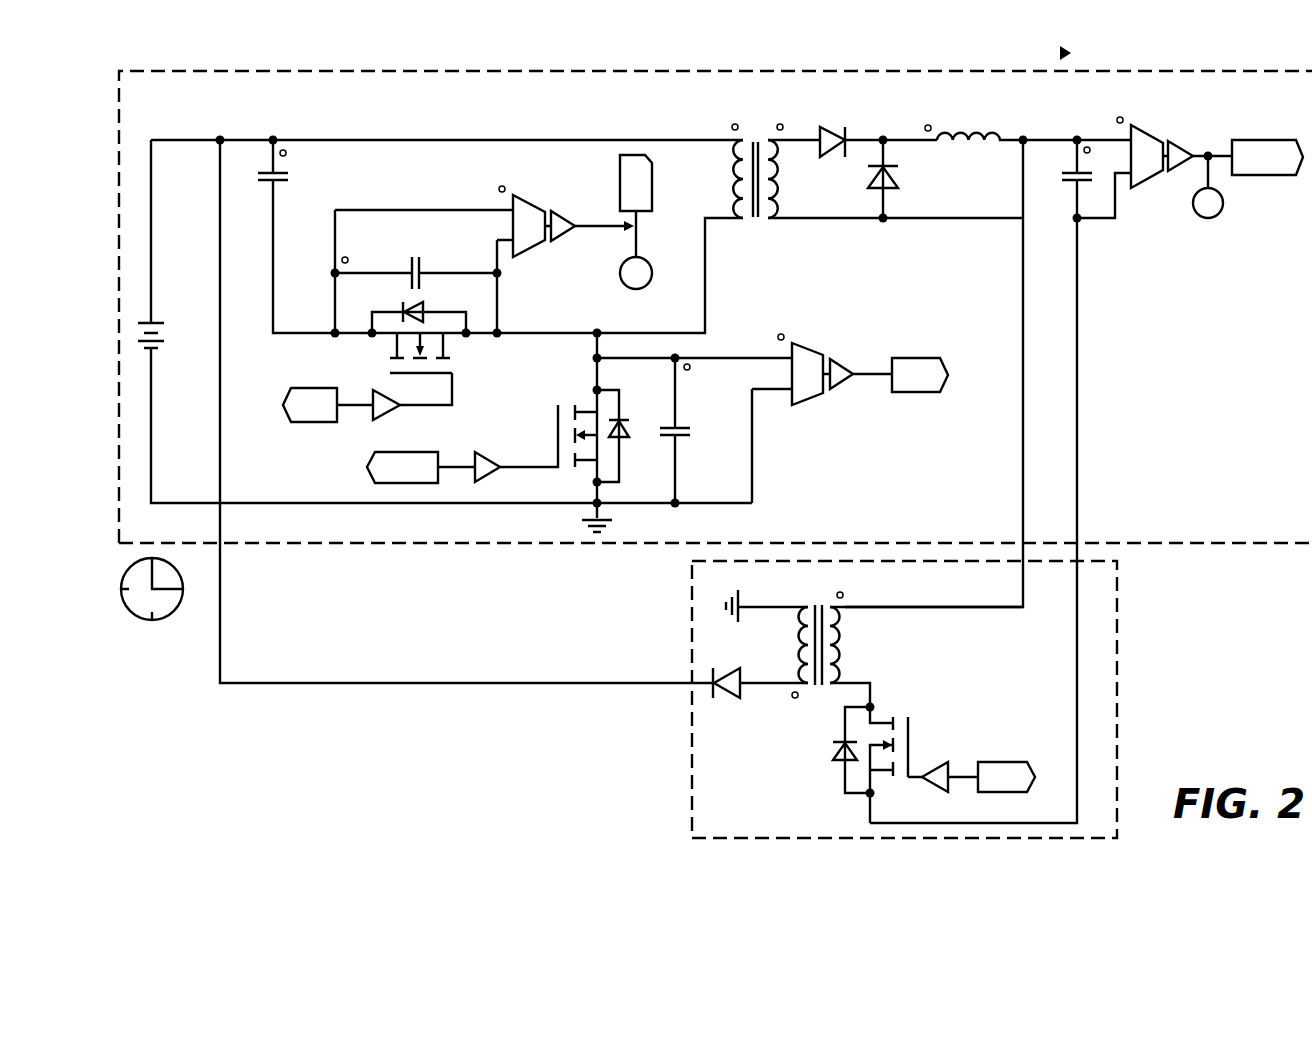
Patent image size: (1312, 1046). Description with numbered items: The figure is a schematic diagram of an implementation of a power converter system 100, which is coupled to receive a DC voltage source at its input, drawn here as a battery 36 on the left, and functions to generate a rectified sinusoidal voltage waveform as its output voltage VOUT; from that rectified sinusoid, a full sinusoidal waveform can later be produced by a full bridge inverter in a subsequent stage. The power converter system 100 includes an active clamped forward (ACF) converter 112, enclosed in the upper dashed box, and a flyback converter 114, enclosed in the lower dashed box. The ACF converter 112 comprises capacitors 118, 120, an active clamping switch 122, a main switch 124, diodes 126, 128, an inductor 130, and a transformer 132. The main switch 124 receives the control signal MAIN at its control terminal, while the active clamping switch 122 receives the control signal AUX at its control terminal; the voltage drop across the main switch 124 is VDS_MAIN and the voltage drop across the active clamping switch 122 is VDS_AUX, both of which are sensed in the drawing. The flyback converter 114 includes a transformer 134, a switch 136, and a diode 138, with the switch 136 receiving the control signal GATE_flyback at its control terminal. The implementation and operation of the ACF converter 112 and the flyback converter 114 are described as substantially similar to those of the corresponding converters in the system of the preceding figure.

The battery 36 is at (167, 335).
The power converter system 100 is at (230, 780).
The active clamped forward (ACF) converter 112 is at (1165, 546).
The flyback converter 114 is at (1118, 636).
The capacitor 118 is at (279, 184).
The capacitor 120 is at (1087, 182).
The active clamping switch 122 is at (452, 344).
The main switch 124 is at (556, 432).
The diode 126 is at (828, 126).
The diode 128 is at (898, 182).
The inductor 130 is at (948, 130).
The transformer 132 is at (757, 222).
The transformer 134 is at (822, 600).
The switch 136 is at (905, 725).
The diode 138 is at (725, 697).